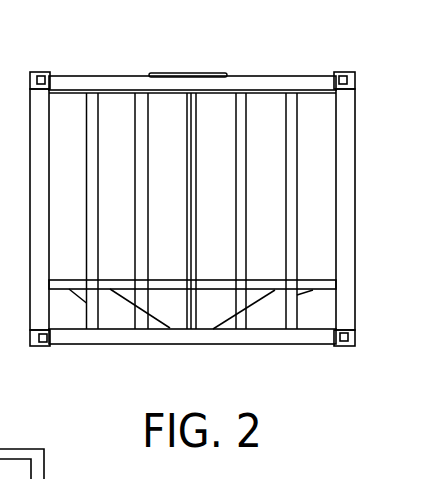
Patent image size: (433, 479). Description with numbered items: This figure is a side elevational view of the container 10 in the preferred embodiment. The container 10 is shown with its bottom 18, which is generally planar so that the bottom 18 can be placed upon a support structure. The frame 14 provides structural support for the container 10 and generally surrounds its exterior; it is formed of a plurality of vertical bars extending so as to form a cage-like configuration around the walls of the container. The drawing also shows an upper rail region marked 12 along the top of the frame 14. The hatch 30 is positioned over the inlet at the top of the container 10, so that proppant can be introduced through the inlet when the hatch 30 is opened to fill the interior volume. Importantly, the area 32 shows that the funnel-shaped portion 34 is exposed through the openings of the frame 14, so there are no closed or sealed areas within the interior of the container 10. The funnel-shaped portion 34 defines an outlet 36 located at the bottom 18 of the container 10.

The container 10 is at (225, 213).
The top rail 12 is at (105, 77).
The frame 14 is at (348, 167).
The bottom 18 is at (283, 345).
The hatch 30 is at (184, 73).
The area 32 is at (117, 325).
The funnel-shaped portion 34 is at (150, 317).
The outlet 36 is at (207, 330).